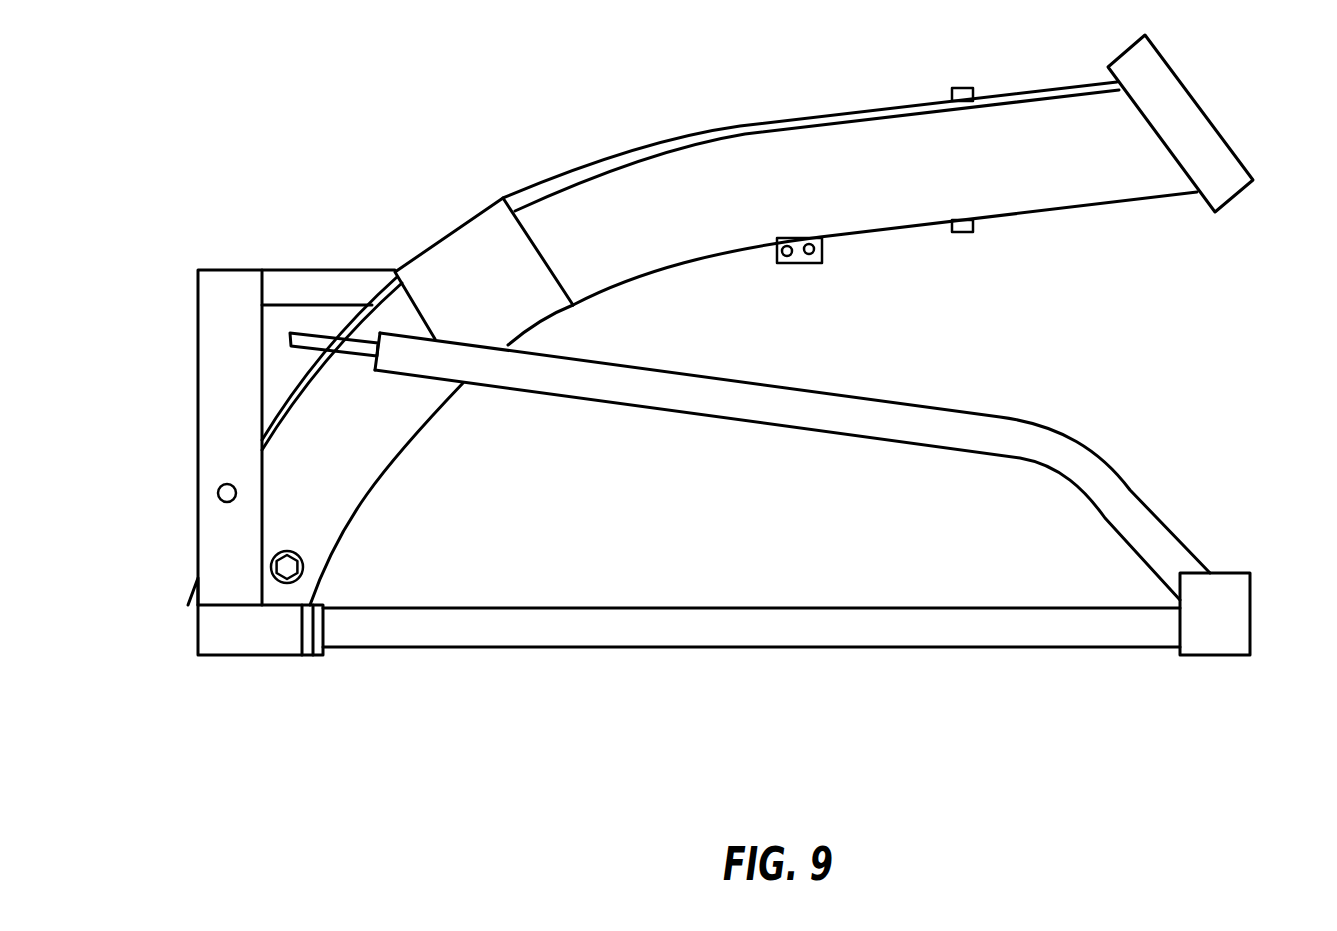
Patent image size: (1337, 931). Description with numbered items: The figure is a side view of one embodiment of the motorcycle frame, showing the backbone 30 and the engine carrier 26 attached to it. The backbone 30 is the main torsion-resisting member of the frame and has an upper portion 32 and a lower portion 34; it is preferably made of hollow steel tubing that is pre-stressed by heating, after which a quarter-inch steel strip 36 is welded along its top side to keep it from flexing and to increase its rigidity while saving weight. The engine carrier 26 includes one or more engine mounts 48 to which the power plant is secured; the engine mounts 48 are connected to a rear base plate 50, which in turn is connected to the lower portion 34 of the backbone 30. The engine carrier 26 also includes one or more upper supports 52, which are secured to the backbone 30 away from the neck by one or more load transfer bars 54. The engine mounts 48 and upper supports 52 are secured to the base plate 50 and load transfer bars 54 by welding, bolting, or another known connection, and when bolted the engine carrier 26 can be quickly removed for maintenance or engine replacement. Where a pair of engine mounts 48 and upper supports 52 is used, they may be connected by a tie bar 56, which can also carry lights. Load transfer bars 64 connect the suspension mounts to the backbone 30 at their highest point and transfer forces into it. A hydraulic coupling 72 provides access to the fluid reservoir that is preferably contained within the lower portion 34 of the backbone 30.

The engine carrier 26 is at (162, 220).
The backbone 30 is at (710, 277).
The upper portion 32 is at (1020, 173).
The lower portion 34 is at (370, 447).
The strip 36 is at (842, 112).
The engine mounts 48 is at (745, 633).
The rear base plate 50 is at (227, 630).
The upper supports 52 is at (772, 410).
The load transfer bars 54 is at (288, 337).
The tie bar 56 is at (1232, 622).
The load transfer bars 64 is at (327, 287).
The hydraulic coupling 72 is at (293, 567).